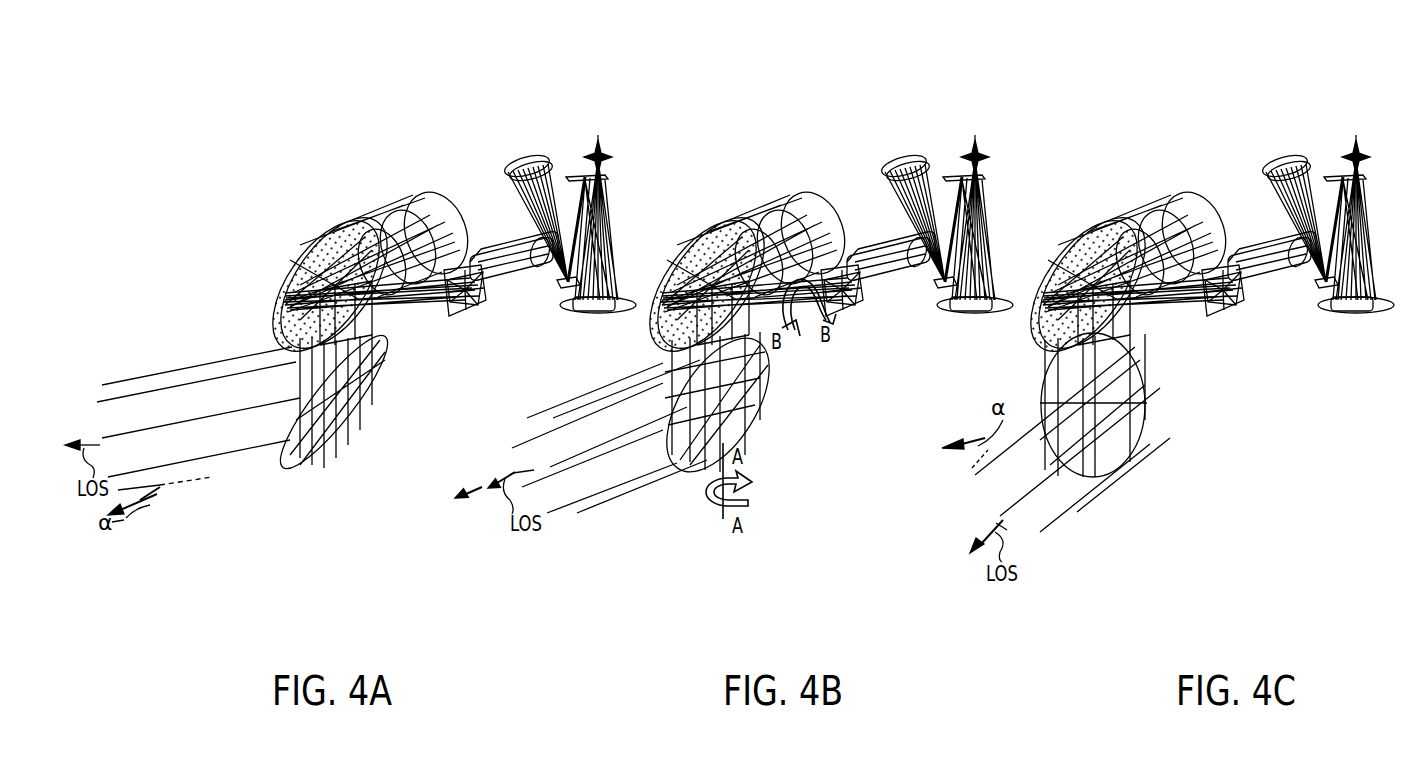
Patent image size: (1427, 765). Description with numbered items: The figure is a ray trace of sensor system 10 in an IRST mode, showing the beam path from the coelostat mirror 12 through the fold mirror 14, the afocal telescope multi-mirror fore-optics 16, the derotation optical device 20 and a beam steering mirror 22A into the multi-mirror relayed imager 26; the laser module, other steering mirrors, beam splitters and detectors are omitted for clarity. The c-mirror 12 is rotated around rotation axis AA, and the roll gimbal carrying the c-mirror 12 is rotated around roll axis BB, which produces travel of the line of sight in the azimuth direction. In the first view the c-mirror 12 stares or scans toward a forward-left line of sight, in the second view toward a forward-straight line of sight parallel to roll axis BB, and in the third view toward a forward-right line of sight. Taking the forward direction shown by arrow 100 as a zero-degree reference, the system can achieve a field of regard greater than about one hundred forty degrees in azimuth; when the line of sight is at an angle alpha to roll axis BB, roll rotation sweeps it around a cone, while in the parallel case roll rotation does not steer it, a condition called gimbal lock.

In FIG. 4A, the sensor system 10 is at (345, 90).
In FIG. 4B, the sensor system 10 is at (750, 90).
In FIG. 4C, the sensor system 10 is at (1130, 90).
In FIG. 4A, the coelostat mirror 12 is at (345, 428).
In FIG. 4B, the coelostat mirror 12 is at (762, 400).
In FIG. 4C, the coelostat mirror 12 is at (1147, 410).
In FIG. 4A, the fold mirror 14 is at (318, 244).
In FIG. 4B, the fold mirror 14 is at (693, 244).
In FIG. 4C, the fold mirror 14 is at (1078, 244).
In FIG. 4A, the afocal telescope multi-mirror arrangement fore-optics 16 is at (450, 178).
In FIG. 4A, the derotation optical device 20 is at (468, 322).
In FIG. 4B, the derotation optical device 20 is at (847, 320).
In FIG. 4C, the derotation optical device 20 is at (1233, 320).
In FIG. 4A, the beam steering mirror 22A is at (535, 284).
In FIG. 4B, the beam steering mirror 22A is at (912, 284).
In FIG. 4C, the beam steering mirror 22A is at (1293, 284).
In FIG. 4A, the multi-mirror relayed imager 26 is at (625, 130).
In FIG. 4B, the multi-mirror relayed imager 26 is at (1020, 130).
In FIG. 4C, the multi-mirror relayed imager 26 is at (1392, 130).
In FIG. 4A, the arrow indicating forward direction 100 is at (150, 500).
In FIG. 4B, the arrow indicating forward direction 100 is at (474, 490).
In FIG. 4C, the arrow indicating forward direction 100 is at (966, 452).